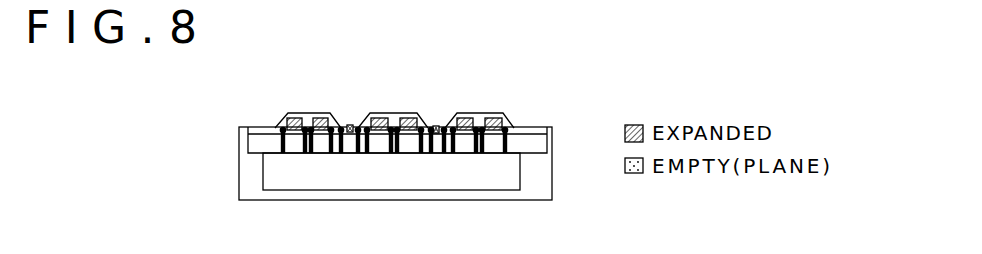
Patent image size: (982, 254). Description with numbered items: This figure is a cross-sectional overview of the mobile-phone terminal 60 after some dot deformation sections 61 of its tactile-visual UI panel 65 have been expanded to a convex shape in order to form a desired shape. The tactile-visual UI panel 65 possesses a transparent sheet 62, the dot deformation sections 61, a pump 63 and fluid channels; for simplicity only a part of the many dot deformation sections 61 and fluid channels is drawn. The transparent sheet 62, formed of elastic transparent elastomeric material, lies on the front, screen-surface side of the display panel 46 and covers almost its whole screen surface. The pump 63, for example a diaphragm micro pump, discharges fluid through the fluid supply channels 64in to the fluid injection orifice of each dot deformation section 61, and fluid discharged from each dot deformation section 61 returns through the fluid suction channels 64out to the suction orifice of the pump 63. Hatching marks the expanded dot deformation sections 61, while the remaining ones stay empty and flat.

The mobile-phone terminal 60 is at (214, 124).
The dot deformation section 61 is at (347, 126).
The transparent sheet 62 is at (555, 128).
The pump 63 is at (263, 172).
The fluid supply channel 64in is at (280, 127).
The fluid suction channel 64out is at (512, 126).
The tactile-visual UI panel 65 is at (506, 105).
The display panel 46 is at (547, 147).